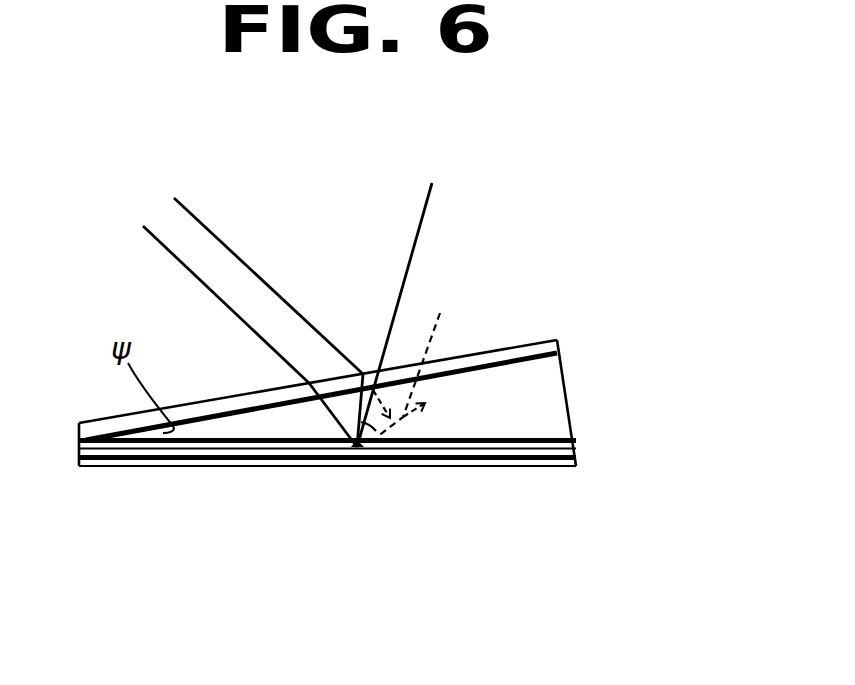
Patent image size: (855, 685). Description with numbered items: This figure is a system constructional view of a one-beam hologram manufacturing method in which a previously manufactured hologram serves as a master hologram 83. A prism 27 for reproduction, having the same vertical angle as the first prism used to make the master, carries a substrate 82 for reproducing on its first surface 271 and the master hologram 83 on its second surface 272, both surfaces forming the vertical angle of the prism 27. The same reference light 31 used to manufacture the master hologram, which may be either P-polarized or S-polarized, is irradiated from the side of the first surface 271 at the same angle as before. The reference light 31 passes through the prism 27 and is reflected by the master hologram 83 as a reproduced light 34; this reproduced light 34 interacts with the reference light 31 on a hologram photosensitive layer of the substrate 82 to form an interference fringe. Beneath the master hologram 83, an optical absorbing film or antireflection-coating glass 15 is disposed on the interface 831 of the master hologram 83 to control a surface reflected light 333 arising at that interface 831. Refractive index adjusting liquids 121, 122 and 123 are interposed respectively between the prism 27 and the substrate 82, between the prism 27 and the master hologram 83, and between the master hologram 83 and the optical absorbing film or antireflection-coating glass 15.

The reference light 31 is at (232, 248).
The substrate for reproducing 82 is at (547, 340).
The refractive index adjusting liquid 121 is at (224, 404).
The first surface 271 is at (517, 352).
The prism for reproduction 27 is at (550, 378).
The surface reflected light 333 is at (421, 353).
The reproduced light 34 is at (372, 467).
The refractive index adjusting liquid 122 is at (200, 444).
The master hologram 83 is at (572, 448).
The second surface 272 is at (264, 458).
The refractive index adjusting liquid 123 is at (573, 457).
The interface 831 is at (467, 468).
The optical absorbing film (or antireflection-coating glass) 15 is at (547, 461).